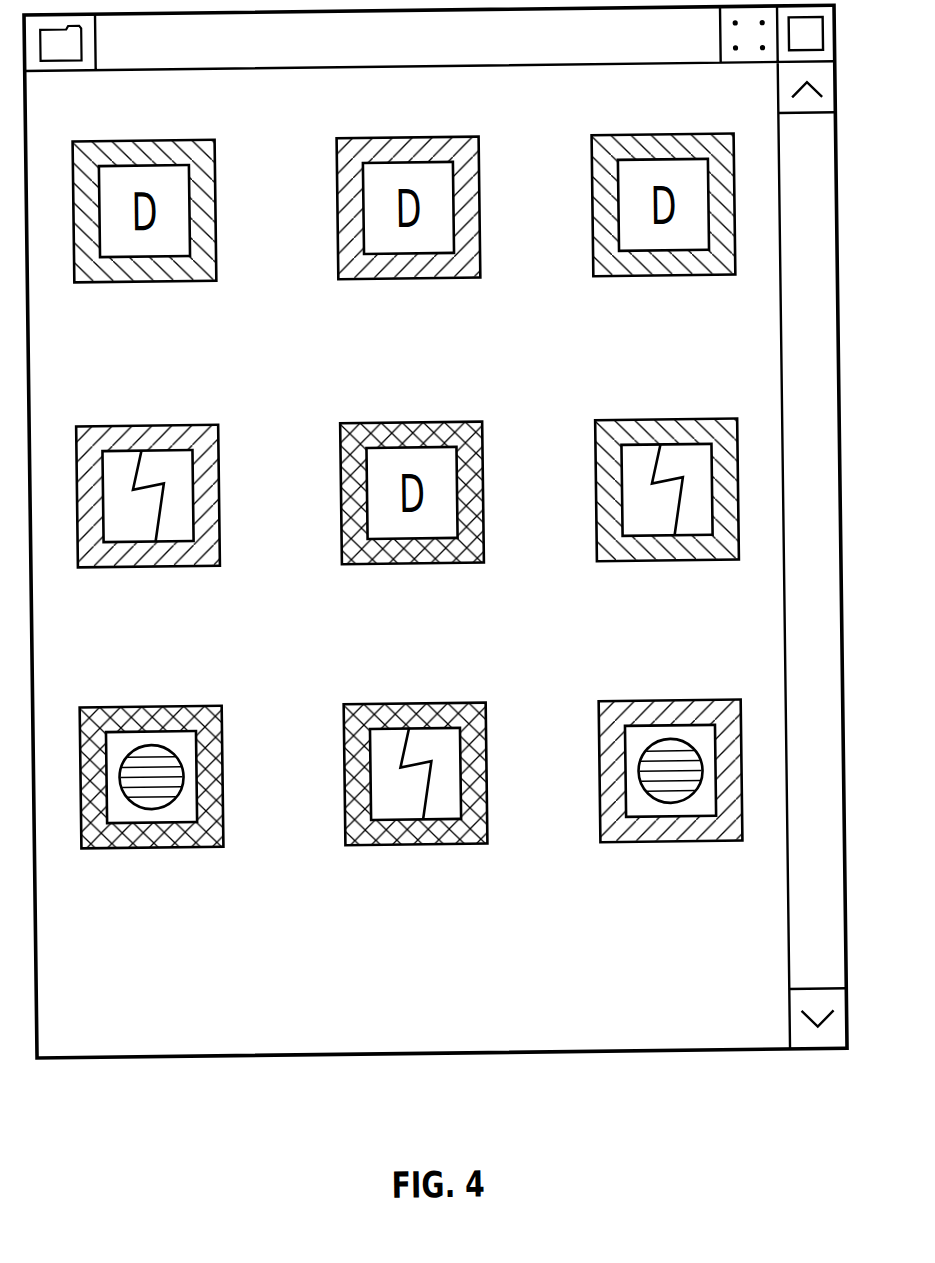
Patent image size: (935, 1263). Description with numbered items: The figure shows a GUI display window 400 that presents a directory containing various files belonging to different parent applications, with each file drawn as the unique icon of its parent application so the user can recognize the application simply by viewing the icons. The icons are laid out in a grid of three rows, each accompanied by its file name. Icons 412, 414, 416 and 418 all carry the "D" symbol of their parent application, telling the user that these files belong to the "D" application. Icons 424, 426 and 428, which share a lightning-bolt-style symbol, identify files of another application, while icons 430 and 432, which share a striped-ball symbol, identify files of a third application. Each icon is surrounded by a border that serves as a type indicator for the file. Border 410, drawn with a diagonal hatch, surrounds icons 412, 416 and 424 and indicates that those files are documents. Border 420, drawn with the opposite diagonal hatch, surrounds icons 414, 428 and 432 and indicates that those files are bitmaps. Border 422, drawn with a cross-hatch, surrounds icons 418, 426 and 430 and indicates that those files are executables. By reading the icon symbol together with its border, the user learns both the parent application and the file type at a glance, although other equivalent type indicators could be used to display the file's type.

The GUI display window 400 is at (436, 593).
The border 410 is at (138, 147).
The icon 412 is at (161, 192).
The icon 414 is at (425, 192).
The icon 416 is at (680, 190).
The icon 418 is at (422, 470).
The border 420 is at (401, 148).
The border 422 is at (398, 430).
The icon 424 is at (676, 468).
The icon 426 is at (428, 748).
The icon 428 is at (157, 469).
The icon 430 is at (164, 749).
The icon 432 is at (683, 745).